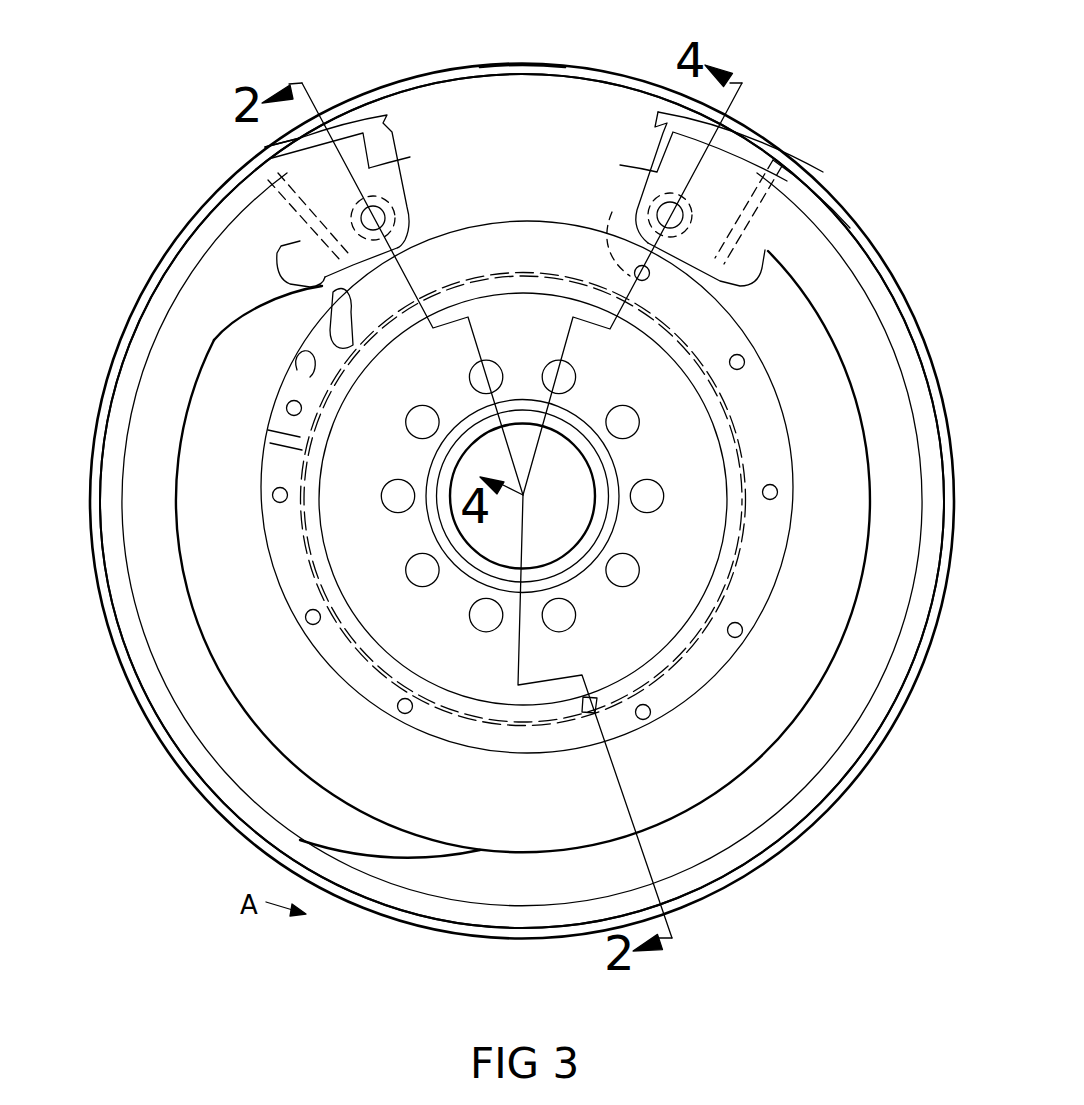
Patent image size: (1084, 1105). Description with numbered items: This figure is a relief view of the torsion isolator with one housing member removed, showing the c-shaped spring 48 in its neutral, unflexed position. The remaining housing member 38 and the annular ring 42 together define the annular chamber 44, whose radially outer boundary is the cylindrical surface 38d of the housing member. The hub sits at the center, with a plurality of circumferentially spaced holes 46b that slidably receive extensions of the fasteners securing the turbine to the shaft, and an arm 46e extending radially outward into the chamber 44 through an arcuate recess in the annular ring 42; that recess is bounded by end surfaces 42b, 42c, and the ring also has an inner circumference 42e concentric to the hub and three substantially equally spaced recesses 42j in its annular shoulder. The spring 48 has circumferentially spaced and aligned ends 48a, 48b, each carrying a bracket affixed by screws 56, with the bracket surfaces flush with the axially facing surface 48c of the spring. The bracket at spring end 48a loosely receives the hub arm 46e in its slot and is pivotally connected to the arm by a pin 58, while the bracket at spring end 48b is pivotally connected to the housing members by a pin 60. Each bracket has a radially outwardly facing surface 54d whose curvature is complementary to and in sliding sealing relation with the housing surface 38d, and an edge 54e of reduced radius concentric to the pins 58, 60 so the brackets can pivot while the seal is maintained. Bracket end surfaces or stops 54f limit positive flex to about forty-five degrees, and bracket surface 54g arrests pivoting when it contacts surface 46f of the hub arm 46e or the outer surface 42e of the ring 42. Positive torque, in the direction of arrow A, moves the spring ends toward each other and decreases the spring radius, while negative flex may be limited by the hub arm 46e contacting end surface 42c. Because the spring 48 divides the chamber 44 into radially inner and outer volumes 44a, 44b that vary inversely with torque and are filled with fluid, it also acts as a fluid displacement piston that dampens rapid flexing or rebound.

The housing member 38 is at (818, 822).
The cylindrical surface 38d is at (528, 77).
The annular ring 42 is at (718, 673).
The end surface 42b is at (612, 226).
The end surface 42c is at (297, 354).
The inner circumference 42e is at (725, 297).
The recesses 42j is at (268, 436).
The annular chamber 44 is at (535, 121).
The radially inner volume 44a is at (232, 652).
The radially outer volume 44b is at (210, 772).
The holes 46b is at (418, 563).
The arm 46e is at (412, 236).
The surface 46f is at (352, 342).
The c-shaped spring 48 is at (283, 753).
The spring end 48a is at (405, 160).
The spring end 48b is at (715, 160).
The axially facing surface 48c is at (405, 830).
The radially outwardly facing surface 54d is at (273, 145).
The edge 54e is at (372, 113).
The bracket end surfaces or stops 54f is at (369, 168).
The bracket surface 54g is at (321, 306).
The screws 56 is at (832, 214).
The pin 58 is at (385, 212).
The pin 60 is at (658, 206).